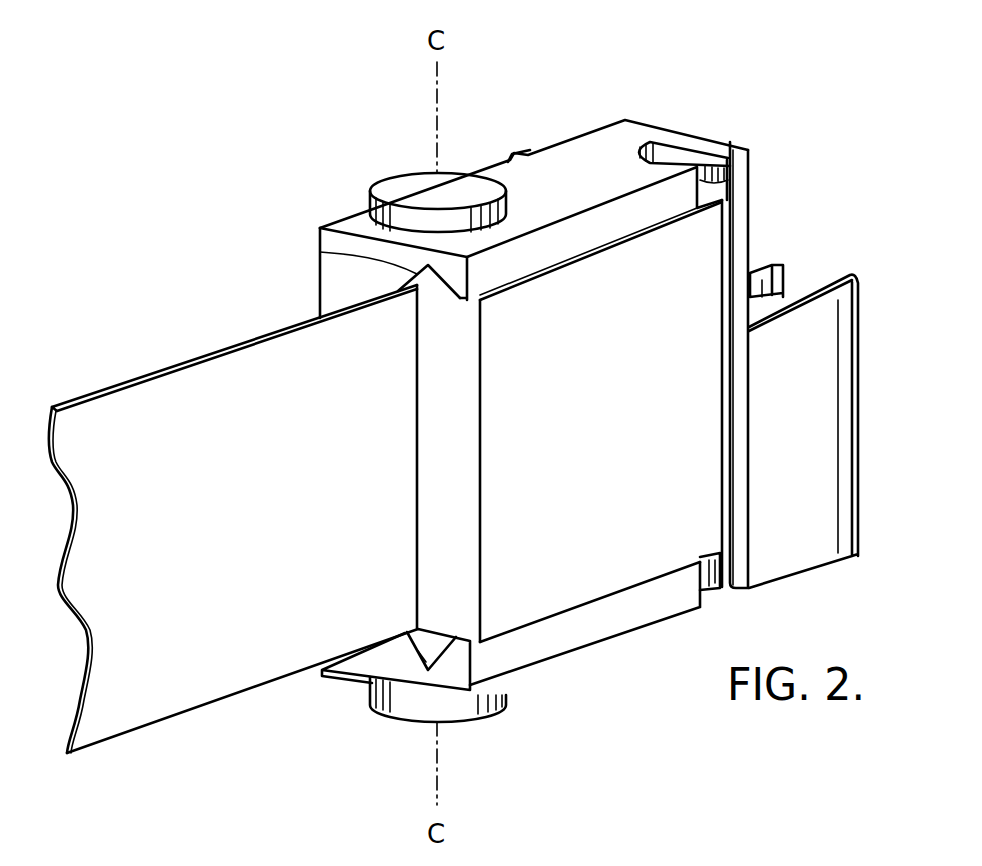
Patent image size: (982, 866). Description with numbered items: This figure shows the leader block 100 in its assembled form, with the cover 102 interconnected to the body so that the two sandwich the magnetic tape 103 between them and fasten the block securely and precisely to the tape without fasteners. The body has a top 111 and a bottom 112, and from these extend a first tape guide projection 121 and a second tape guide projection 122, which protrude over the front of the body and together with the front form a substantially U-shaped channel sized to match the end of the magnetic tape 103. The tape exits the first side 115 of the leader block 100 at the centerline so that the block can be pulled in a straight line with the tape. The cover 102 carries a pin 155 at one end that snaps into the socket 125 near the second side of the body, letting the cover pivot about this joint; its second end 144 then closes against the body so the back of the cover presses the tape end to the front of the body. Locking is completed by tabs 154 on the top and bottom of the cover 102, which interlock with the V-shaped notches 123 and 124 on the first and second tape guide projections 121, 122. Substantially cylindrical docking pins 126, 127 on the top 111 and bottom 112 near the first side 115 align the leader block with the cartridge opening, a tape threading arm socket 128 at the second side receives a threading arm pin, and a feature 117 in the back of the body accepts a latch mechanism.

The leader block 100 is at (553, 52).
The cover 102 is at (700, 497).
The magnetic tape 103 is at (180, 387).
The top 111 is at (596, 144).
The bottom 112 is at (577, 652).
The first side 115 is at (320, 290).
The feature 117 is at (517, 162).
The first tape guide projection 121 is at (602, 223).
The second tape guide projection 122 is at (643, 603).
The notch 123 is at (320, 247).
The notch 124 is at (372, 691).
The socket 125 is at (693, 150).
The docking pin 126 is at (402, 188).
The docking pin 127 is at (450, 707).
The tape threading arm socket 128 is at (800, 286).
The second end of cover 144 is at (447, 466).
The tab 154 is at (428, 282).
The pin 155 is at (727, 195).